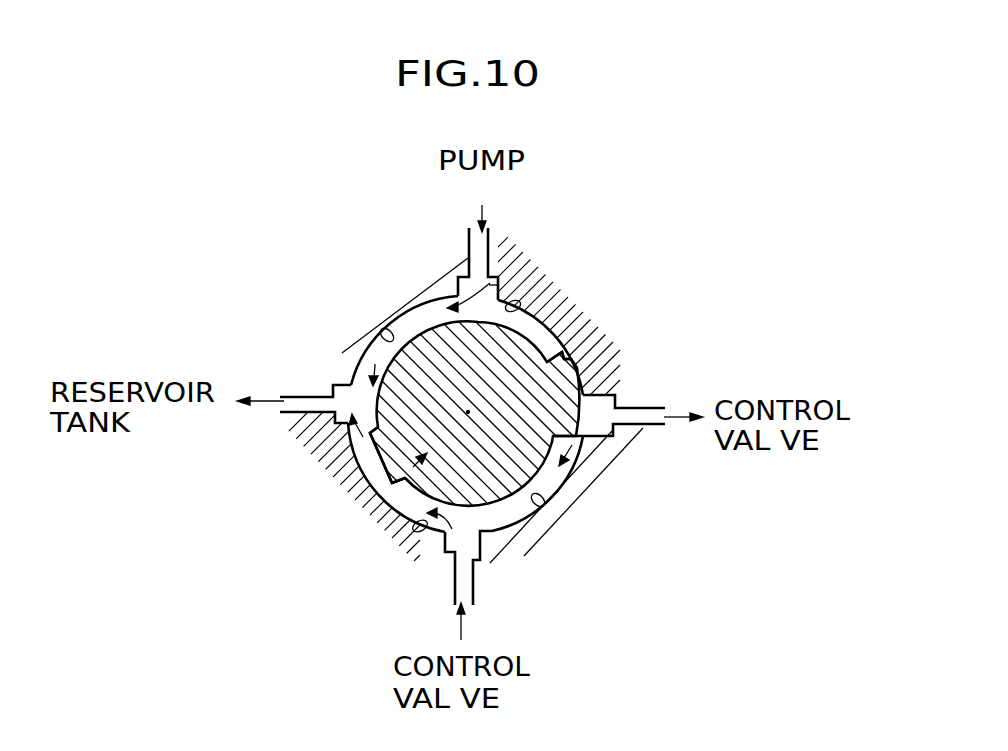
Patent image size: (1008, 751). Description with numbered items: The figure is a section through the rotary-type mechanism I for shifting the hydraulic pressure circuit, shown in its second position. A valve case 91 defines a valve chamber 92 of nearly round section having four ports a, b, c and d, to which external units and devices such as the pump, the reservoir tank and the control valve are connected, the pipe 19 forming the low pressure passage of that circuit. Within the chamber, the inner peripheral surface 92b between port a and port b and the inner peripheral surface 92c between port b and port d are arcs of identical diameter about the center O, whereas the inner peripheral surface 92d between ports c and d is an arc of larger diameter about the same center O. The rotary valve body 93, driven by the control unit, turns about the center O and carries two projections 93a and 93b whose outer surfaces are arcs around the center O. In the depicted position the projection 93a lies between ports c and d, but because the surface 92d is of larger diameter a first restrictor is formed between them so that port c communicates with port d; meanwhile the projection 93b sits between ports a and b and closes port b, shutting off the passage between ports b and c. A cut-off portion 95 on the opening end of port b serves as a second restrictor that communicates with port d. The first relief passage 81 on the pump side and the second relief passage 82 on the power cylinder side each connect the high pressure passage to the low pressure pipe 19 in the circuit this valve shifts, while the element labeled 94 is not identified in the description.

The hydraulic pressure circuit shifting mechanism I is at (683, 272).
The first relief passage 81 is at (427, 310).
The second relief passage 82 is at (558, 478).
The valve case 91 is at (390, 288).
The valve chamber 92 is at (387, 343).
The inner peripheral surface 92b is at (522, 308).
The inner peripheral surface 92c is at (543, 503).
The inner peripheral surface 92d is at (421, 530).
The valve body 93 is at (423, 493).
The projection 93a is at (385, 470).
The projection 93b is at (563, 356).
The passage 94 is at (357, 450).
The cut-off portion 95 is at (589, 441).
The pipe 19 is at (395, 478).
The center O is at (467, 410).
The port a is at (493, 264).
The port b is at (608, 390).
The port c is at (347, 387).
The port d is at (488, 568).